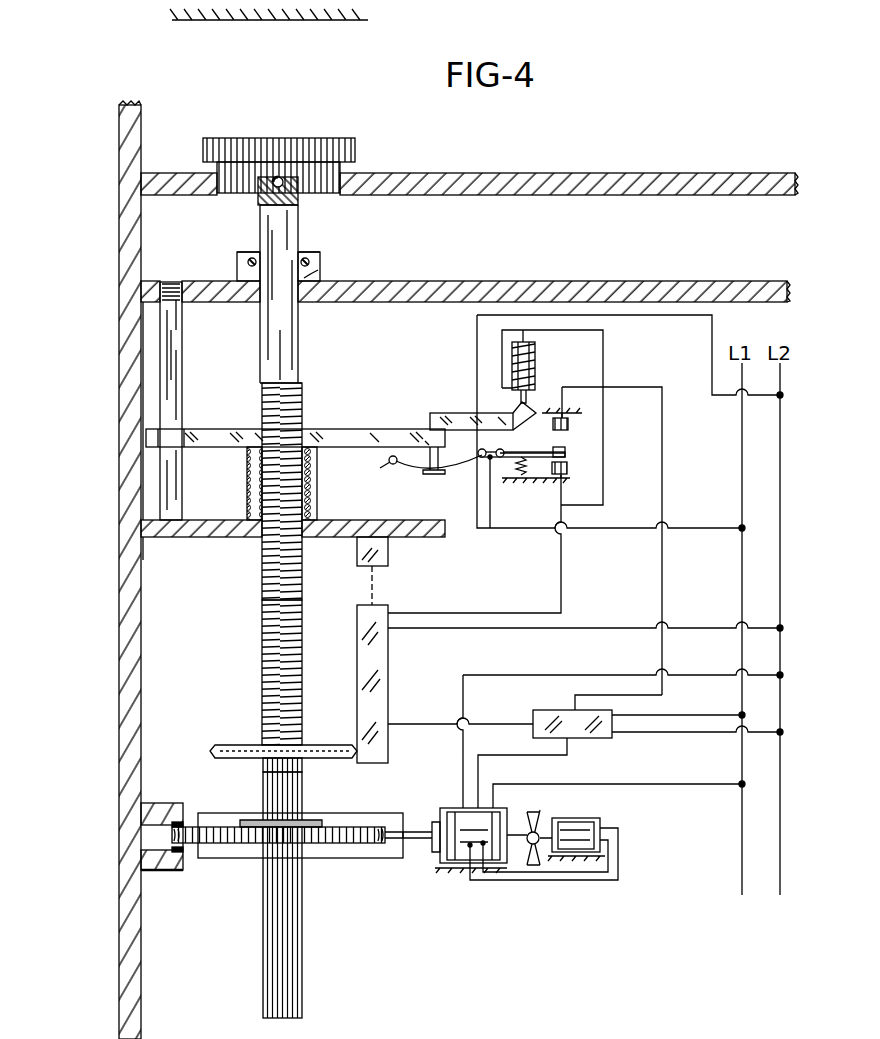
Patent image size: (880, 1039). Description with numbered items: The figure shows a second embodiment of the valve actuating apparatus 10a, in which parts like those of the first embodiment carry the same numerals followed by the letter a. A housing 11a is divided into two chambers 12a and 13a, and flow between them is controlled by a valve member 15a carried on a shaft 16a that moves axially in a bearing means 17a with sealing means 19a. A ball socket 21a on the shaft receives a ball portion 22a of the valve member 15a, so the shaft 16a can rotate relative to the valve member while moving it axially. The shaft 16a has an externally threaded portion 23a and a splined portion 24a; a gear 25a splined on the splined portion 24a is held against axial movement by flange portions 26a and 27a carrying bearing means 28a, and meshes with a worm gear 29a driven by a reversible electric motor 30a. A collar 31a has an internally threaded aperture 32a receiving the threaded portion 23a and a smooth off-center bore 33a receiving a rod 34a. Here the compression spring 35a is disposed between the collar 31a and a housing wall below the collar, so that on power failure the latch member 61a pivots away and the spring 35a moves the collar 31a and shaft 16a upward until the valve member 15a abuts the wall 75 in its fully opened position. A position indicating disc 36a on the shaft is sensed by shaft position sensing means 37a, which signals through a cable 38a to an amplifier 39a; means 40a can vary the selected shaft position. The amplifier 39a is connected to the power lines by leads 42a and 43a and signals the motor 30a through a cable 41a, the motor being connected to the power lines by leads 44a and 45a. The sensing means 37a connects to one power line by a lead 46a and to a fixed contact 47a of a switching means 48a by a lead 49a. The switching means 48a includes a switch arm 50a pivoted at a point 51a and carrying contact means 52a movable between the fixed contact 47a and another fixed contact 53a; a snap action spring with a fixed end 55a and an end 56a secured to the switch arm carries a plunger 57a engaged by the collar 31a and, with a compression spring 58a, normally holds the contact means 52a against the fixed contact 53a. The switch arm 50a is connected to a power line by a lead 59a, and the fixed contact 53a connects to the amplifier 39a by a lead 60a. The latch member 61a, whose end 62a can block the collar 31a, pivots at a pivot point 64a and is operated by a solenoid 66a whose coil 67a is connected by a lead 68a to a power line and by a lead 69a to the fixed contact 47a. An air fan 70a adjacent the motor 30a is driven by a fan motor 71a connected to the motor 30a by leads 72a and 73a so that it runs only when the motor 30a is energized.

The wall 75 is at (328, 21).
The apparatus 10a is at (583, 160).
The housing 11a is at (122, 397).
The chamber 12a is at (390, 160).
The chamber 13a is at (379, 268).
The valve member 15a is at (243, 145).
The shaft 16a is at (300, 572).
The bearing means 17a is at (305, 280).
The sealing means 19a is at (308, 260).
The ball socket 21a is at (258, 195).
The ball portion 22a is at (300, 189).
The externally threaded portion 23a is at (298, 690).
The splined portion 24a is at (302, 800).
The gear 25a is at (353, 828).
The flange portion 26a is at (162, 803).
The flange portion 27a is at (162, 866).
The bearing means 28a is at (182, 822).
The worm gear 29a is at (342, 855).
The electric motor 30a is at (450, 808).
The collar 31a is at (348, 432).
The internally threaded aperture 32a is at (247, 468).
The off center bore 33a is at (188, 443).
The rod 34a is at (178, 391).
The compression spring 35a is at (316, 454).
The position indicating disc 36a is at (327, 737).
The shaft position sensing means 37a is at (388, 681).
The cable 38a is at (410, 723).
The amplifier 39a is at (547, 711).
The means for varying selected axial position 40a is at (388, 548).
The cable 41a is at (495, 758).
The lead 42a is at (670, 711).
The lead 43a is at (682, 731).
The lead 44a is at (664, 782).
The lead 45a is at (515, 675).
The lead 46a is at (468, 630).
The fixed contact 47a is at (568, 465).
The switching means 48a is at (447, 372).
The lead 49a is at (563, 593).
The switch arm 50a is at (507, 460).
The pivot point 51a is at (496, 462).
The contact means 52a is at (568, 447).
The fixed contact 53a is at (568, 425).
The fixed end of snap action spring 55a is at (390, 463).
The end of snap action spring 56a is at (482, 452).
The plunger 57a is at (427, 463).
The compression spring 58a is at (532, 476).
The lead 59a is at (487, 530).
The lead 60a is at (662, 462).
The latch member 61a is at (451, 414).
The end of latch member 62a is at (430, 413).
The pivot point 64a is at (503, 423).
The solenoid 66a is at (533, 342).
The coil 67a is at (539, 362).
The lead 68a is at (621, 348).
The lead 69a is at (604, 482).
The air fan 70a is at (540, 825).
The fan motor 71a is at (587, 823).
The lead 72a is at (518, 882).
The lead 73a is at (579, 882).